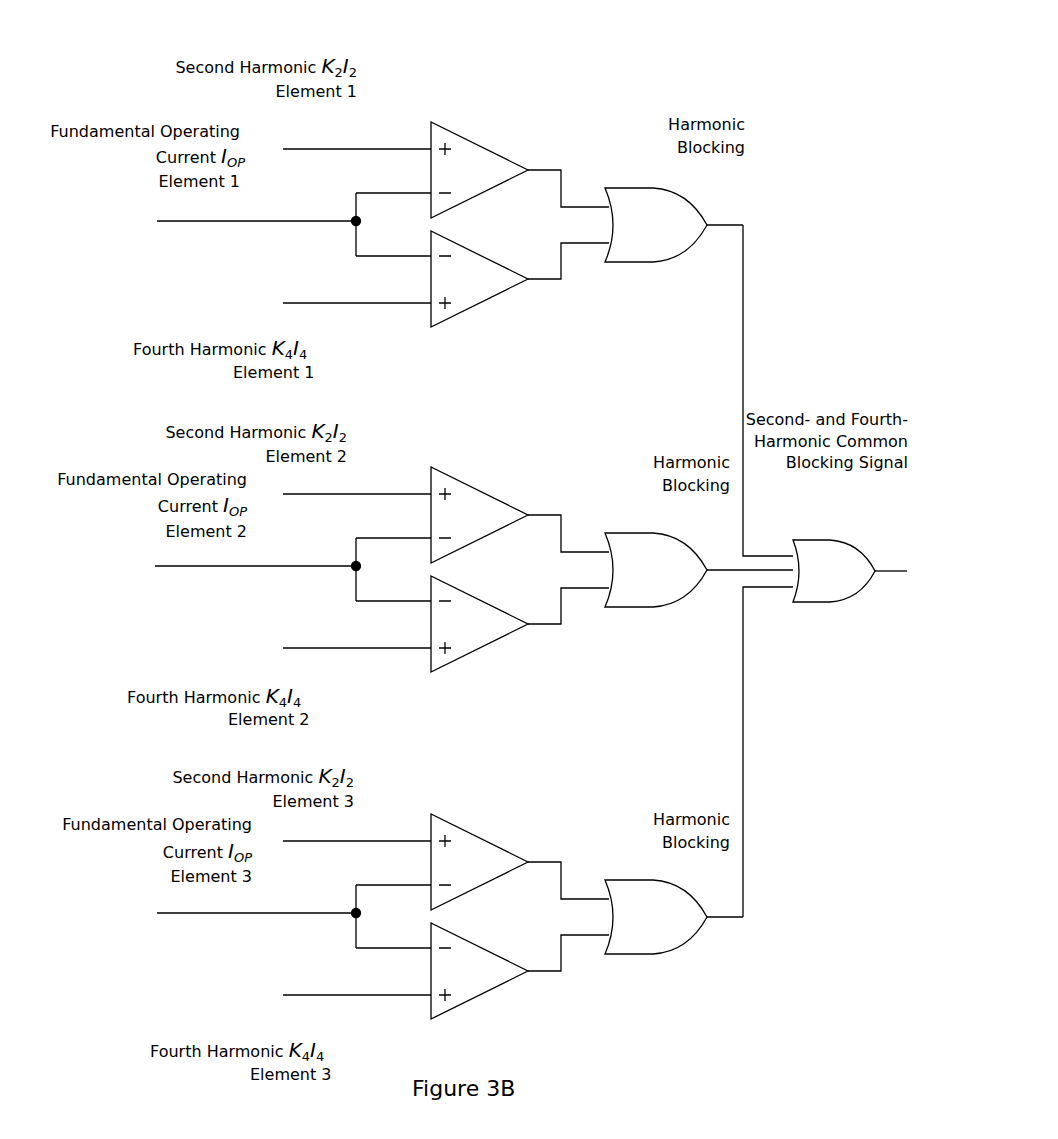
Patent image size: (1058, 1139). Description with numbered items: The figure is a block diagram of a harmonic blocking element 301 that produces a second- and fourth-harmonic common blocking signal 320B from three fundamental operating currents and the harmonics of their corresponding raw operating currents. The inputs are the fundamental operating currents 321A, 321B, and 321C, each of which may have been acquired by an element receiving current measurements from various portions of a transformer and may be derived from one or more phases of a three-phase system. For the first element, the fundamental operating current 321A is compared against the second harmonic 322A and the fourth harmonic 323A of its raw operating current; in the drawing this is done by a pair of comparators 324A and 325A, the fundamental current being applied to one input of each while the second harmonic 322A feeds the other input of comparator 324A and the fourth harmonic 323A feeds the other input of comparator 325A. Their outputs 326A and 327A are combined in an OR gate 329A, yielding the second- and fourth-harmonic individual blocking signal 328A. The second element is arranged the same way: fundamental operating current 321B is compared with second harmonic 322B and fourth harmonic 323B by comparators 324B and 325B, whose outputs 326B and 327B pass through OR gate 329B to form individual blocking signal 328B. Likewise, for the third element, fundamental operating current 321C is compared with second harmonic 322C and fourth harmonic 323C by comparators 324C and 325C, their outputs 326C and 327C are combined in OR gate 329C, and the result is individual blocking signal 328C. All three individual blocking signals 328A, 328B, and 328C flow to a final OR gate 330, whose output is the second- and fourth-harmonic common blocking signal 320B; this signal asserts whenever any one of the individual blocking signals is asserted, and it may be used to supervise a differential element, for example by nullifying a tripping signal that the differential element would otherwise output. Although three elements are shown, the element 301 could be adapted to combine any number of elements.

The harmonic blocking element 301 is at (243, 22).
The second- and fourth-harmonic common blocking signal 320B is at (895, 568).
The fundamental operating current I_OP_1 321A is at (263, 221).
The fundamental operating current I_OP_2 321B is at (268, 566).
The fundamental operating current I_OP_3 321C is at (272, 913).
The second harmonic 322A is at (347, 149).
The second harmonic 322B is at (382, 494).
The second harmonic 322C is at (389, 841).
The fourth harmonic 323A is at (340, 303).
The fourth harmonic 323B is at (337, 648).
The fourth harmonic 323C is at (340, 995).
The comparator 324A is at (497, 179).
The comparator 324B is at (497, 524).
The comparator 324C is at (497, 871).
The comparator 325A is at (499, 289).
The comparator 325B is at (499, 634).
The comparator 325C is at (499, 981).
The comparator output 326A is at (548, 170).
The comparator output 326B is at (548, 515).
The comparator output 326C is at (548, 862).
The comparator output 327A is at (548, 279).
The comparator output 327B is at (548, 624).
The comparator output 327C is at (548, 971).
The second- and fourth-harmonic individual blocking signal 328A is at (737, 225).
The second- and fourth-harmonic individual blocking signal 328B is at (733, 568).
The second- and fourth-harmonic individual blocking signal 328C is at (737, 917).
The OR gate 329A is at (674, 236).
The OR gate 329B is at (674, 581).
The OR gate 329C is at (674, 928).
The OR gate 330 is at (850, 581).